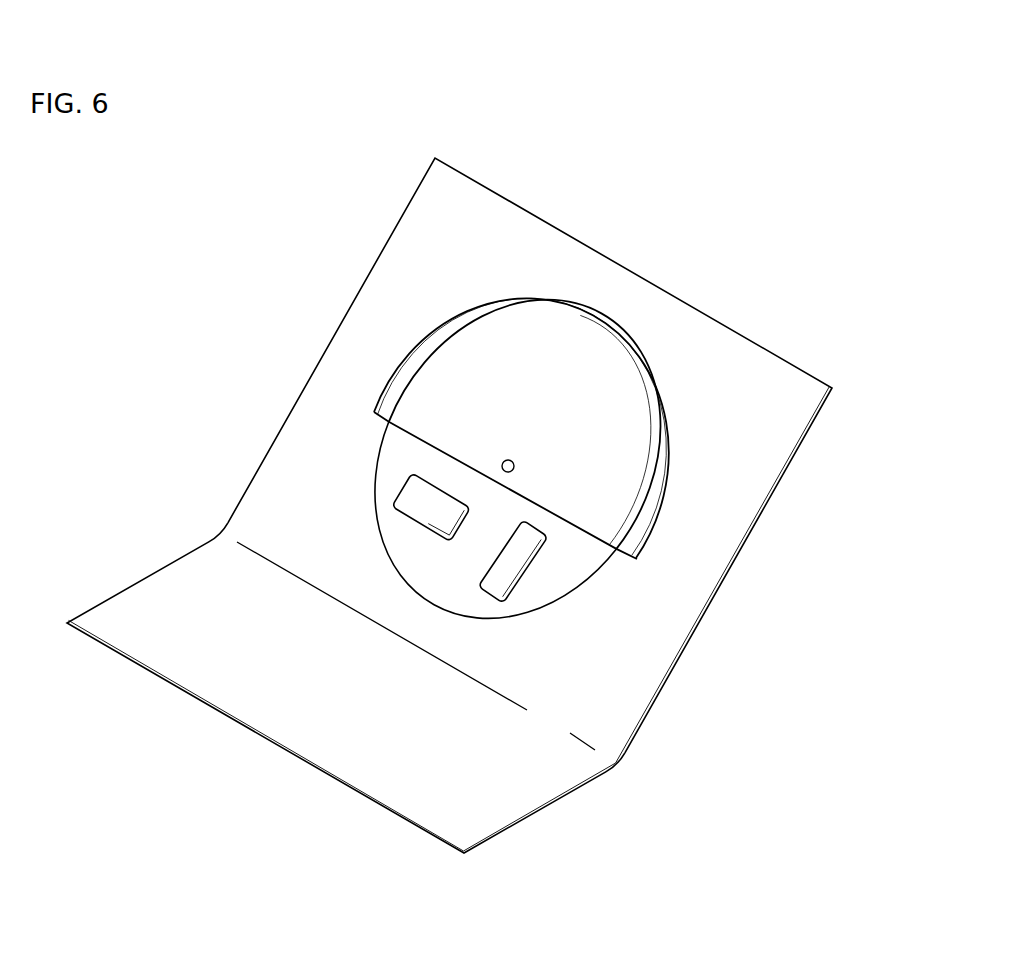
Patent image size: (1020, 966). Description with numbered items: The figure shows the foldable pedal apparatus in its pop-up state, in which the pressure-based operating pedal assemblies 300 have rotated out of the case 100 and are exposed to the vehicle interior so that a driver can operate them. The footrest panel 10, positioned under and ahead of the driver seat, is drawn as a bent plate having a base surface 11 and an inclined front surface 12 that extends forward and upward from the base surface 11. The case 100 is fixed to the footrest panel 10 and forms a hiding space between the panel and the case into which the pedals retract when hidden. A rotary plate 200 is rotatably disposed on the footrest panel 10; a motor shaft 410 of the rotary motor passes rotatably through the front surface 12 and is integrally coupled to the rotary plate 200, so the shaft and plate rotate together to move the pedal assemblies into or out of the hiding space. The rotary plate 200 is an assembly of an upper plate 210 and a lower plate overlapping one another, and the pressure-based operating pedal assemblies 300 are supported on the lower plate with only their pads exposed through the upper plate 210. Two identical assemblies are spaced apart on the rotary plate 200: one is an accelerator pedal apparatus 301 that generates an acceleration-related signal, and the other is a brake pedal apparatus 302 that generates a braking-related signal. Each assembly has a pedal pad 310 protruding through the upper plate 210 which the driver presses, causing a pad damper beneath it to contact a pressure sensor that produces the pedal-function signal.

The footrest panel 10 is at (481, 505).
The base surface 11 is at (235, 678).
The inclined front surface 12 is at (728, 362).
The case 100 is at (448, 548).
The rotary plate 200 is at (563, 570).
The upper plate 210 is at (425, 560).
The pressure-based operating pedal assemblies 300 is at (308, 686).
The accelerator pedal apparatus 301 is at (482, 603).
The brake pedal apparatus 302 is at (383, 507).
The pedal pad 310 is at (425, 498).
The motor shaft 410 is at (503, 462).